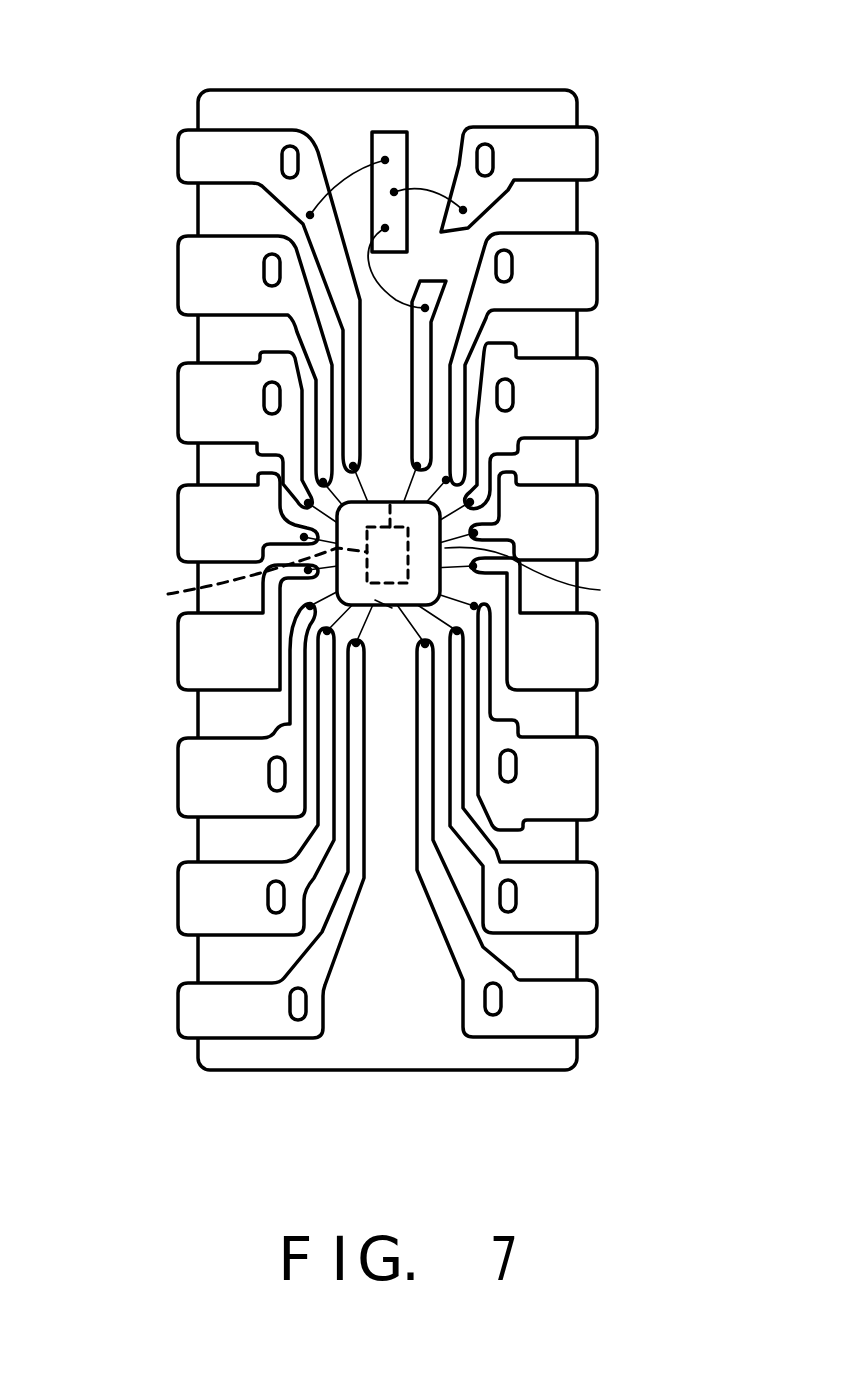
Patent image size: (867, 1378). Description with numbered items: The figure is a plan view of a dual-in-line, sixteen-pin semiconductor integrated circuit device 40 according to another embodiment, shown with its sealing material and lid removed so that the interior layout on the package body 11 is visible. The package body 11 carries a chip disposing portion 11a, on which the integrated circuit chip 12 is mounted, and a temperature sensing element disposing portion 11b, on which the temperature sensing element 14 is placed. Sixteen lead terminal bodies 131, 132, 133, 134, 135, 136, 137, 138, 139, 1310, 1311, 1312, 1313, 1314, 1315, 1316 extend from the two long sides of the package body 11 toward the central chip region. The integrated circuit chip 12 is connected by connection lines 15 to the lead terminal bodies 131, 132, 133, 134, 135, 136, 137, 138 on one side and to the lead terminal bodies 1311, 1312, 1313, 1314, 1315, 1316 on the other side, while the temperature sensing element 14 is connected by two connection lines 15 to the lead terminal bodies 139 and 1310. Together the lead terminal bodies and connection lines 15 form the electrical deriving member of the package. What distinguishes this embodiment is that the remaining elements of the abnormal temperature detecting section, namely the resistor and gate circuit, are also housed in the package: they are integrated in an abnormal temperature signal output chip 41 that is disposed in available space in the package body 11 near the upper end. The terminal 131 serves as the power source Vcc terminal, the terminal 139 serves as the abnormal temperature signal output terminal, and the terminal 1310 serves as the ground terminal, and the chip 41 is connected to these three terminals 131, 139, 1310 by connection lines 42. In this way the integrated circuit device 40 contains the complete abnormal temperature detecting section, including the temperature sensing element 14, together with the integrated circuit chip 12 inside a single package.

The integrated circuit device 40 is at (392, 578).
The package body 11 is at (457, 1050).
The chip disposing portion 11a is at (395, 615).
The temperature sensing element disposing portion 11b is at (379, 532).
The integrated circuit chip 12 is at (539, 577).
The temperature sensing element 14 is at (247, 579).
The connection lines 15 is at (392, 608).
The abnormal temperature signal output chip 41 is at (382, 134).
The connection lines 42 is at (314, 204).
The lead terminal body 131 is at (186, 160).
The lead terminal body 132 is at (186, 275).
The lead terminal body 133 is at (186, 402).
The lead terminal body 134 is at (186, 523).
The lead terminal body 135 is at (186, 651).
The lead terminal body 136 is at (186, 775).
The lead terminal body 137 is at (186, 900).
The lead terminal body 138 is at (186, 1010).
The lead terminal body 139 is at (586, 160).
The lead terminal body 1310 is at (586, 272).
The lead terminal body 1311 is at (586, 398).
The lead terminal body 1312 is at (586, 522).
The lead terminal body 1313 is at (586, 652).
The lead terminal body 1314 is at (586, 778).
The lead terminal body 1315 is at (586, 896).
The lead terminal body 1316 is at (586, 1008).